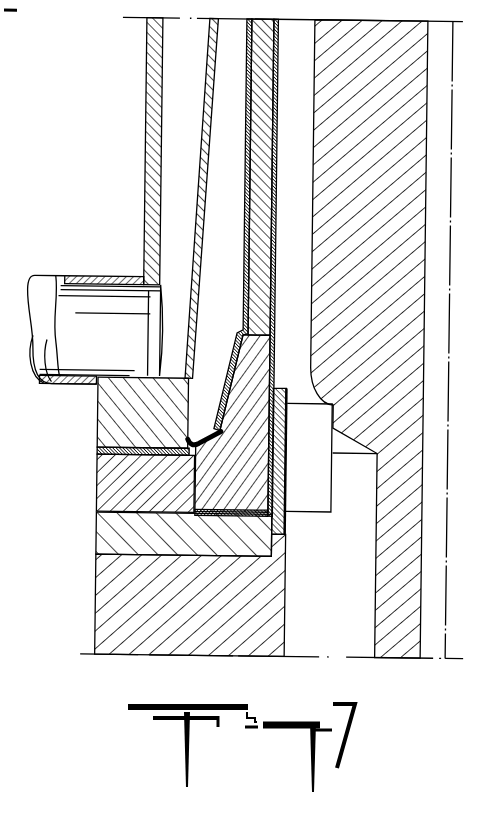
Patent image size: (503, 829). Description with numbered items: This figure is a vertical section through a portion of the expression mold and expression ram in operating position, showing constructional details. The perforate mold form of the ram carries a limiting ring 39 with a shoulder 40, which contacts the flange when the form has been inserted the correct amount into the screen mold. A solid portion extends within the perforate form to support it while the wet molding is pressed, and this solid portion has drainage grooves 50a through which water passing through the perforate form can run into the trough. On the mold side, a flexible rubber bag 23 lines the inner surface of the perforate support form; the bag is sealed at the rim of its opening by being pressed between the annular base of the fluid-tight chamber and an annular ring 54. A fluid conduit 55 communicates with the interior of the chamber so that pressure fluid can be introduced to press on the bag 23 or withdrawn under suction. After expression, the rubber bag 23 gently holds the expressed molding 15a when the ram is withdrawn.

The drainage grooves 50a is at (298, 41).
The rubber bag 23 is at (243, 270).
The expressed molding 15a is at (262, 267).
The shoulder 40 is at (204, 433).
The limiting ring 39 is at (248, 478).
The annular ring 54 is at (117, 478).
The fluid conduit 55 is at (80, 383).